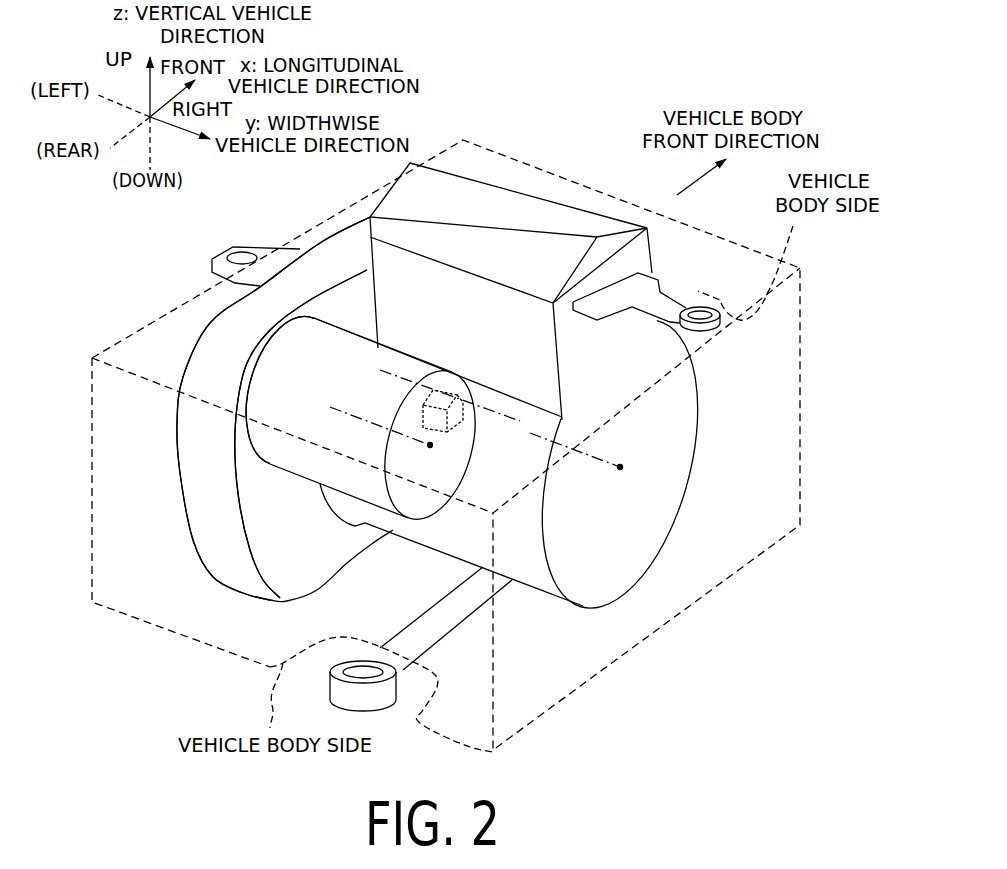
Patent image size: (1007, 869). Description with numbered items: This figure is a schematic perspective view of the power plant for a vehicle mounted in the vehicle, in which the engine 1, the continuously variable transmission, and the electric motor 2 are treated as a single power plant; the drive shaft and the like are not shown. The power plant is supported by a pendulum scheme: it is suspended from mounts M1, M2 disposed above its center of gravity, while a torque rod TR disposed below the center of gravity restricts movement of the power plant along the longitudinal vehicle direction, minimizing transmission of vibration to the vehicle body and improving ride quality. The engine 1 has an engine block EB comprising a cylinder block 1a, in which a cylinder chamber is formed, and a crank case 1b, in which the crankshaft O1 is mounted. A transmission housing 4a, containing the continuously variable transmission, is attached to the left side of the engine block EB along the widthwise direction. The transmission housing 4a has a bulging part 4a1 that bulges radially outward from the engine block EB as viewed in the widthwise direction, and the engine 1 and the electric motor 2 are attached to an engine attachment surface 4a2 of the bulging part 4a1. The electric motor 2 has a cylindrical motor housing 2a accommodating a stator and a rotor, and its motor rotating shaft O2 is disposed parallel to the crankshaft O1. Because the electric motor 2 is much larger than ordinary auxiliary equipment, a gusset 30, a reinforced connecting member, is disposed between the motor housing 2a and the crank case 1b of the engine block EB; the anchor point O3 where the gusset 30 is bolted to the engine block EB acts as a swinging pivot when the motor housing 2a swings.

The engine 1 is at (549, 179).
The cylinder block 1a is at (485, 297).
The crank case 1b is at (533, 557).
The electric motor 2 is at (288, 358).
The motor housing 2a is at (275, 407).
The transmission housing 4a is at (332, 249).
The bulging part 4a1 is at (195, 360).
The engine attachment surface 4a2 is at (258, 538).
The gusset 30 is at (437, 385).
The mount M1 is at (706, 301).
The mount M2 is at (241, 251).
The crankshaft O1 is at (620, 467).
The motor rotating shaft O2 is at (430, 445).
The anchor point O3 is at (513, 418).
The engine block EB is at (644, 440).
The torque rod TR is at (464, 630).